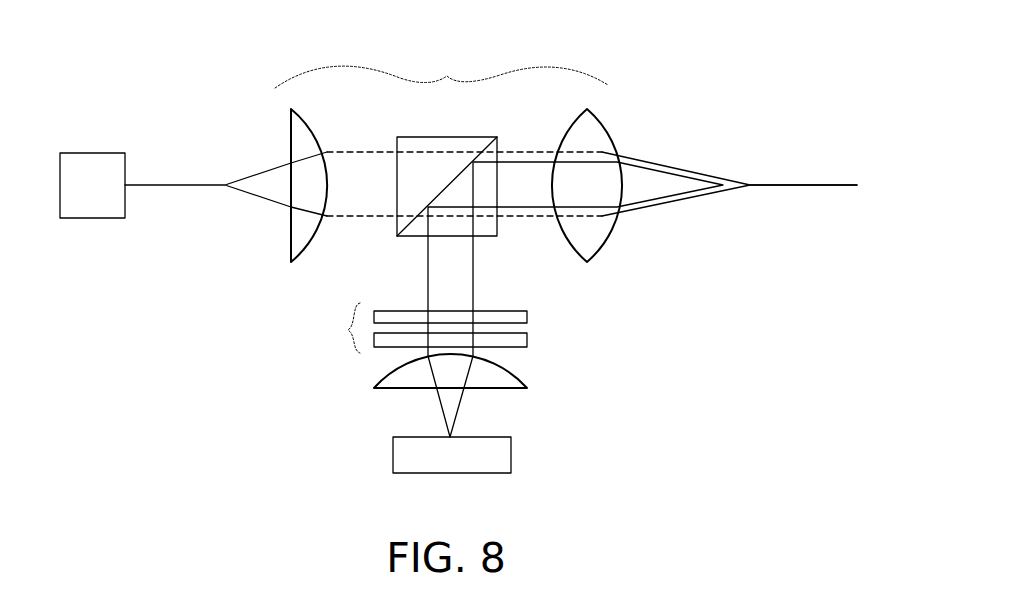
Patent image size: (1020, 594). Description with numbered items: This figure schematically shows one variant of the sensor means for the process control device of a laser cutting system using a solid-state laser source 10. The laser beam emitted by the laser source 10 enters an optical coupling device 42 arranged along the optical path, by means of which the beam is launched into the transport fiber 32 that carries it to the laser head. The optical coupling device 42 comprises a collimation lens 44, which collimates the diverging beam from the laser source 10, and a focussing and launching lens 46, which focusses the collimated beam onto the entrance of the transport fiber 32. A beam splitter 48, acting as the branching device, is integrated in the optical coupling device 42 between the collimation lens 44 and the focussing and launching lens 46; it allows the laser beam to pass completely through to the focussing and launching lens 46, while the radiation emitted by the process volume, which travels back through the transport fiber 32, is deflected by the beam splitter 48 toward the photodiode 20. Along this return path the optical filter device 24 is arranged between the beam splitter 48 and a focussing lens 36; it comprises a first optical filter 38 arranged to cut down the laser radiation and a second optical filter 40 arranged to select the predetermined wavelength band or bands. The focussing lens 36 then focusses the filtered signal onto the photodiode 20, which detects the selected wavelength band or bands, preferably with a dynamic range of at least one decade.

The laser source 10 is at (90, 220).
The photodiode 20 is at (393, 458).
The optical filter device 24 is at (458, 327).
The transport fiber 32 is at (800, 187).
The focussing lens 36 is at (522, 373).
The first optical filter 38 is at (528, 318).
The second optical filter 40 is at (528, 340).
The optical coupling device 42 is at (447, 78).
The collimation lens 44 is at (290, 125).
The focussing and launching lens 46 is at (612, 125).
The beam splitter 48 is at (445, 173).